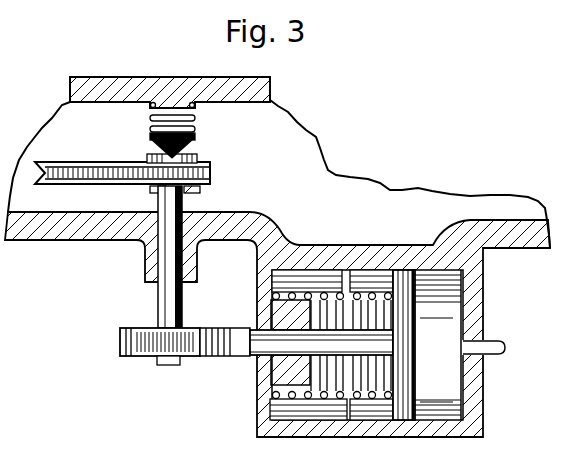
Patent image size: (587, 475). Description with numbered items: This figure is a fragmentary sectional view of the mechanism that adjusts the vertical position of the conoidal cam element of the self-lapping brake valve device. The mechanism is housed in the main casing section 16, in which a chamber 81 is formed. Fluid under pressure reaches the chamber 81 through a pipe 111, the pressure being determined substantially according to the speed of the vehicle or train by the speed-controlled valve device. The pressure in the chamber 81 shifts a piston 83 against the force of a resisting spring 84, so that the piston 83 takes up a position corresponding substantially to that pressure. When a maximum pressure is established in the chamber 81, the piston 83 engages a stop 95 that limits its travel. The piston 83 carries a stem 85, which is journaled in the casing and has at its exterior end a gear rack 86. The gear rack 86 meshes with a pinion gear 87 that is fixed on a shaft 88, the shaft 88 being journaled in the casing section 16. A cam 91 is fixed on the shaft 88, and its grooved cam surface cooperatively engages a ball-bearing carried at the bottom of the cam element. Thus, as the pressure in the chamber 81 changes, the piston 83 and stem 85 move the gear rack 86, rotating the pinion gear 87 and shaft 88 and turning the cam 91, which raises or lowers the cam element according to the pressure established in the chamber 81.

The main casing section 16 is at (62, 228).
The chamber 81 is at (443, 405).
The piston 83 is at (397, 422).
The resisting spring 84 is at (370, 402).
The stem 85 is at (248, 356).
The gear rack 86 is at (212, 358).
The pinion gear 87 is at (146, 328).
The shaft 88 is at (175, 306).
The cam 91 is at (73, 167).
The stop 95 is at (342, 410).
The pipe 111 is at (497, 342).